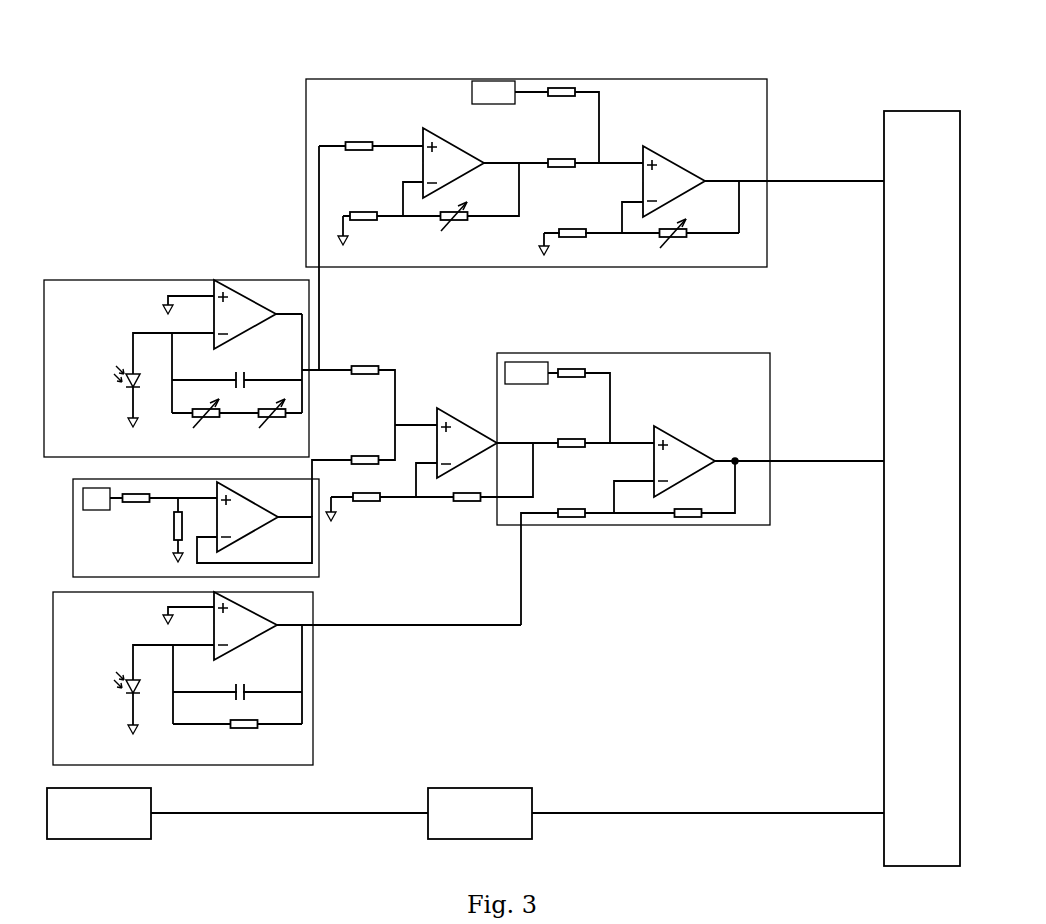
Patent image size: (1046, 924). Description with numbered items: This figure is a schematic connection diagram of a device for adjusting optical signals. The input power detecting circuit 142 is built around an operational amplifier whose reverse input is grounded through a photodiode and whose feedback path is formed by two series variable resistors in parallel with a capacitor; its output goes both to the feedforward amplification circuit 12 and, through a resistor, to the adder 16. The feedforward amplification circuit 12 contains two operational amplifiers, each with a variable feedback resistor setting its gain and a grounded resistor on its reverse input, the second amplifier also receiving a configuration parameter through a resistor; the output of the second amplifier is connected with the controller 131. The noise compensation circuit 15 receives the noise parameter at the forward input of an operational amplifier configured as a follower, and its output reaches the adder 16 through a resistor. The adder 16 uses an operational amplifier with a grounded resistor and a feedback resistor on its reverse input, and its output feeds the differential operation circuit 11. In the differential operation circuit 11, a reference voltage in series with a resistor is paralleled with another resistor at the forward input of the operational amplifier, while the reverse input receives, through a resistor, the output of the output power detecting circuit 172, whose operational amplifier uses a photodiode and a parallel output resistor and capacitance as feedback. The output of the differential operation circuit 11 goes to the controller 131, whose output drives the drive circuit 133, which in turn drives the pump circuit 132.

The differential operation circuit 11 is at (690, 489).
The feedforward amplification circuit 12 is at (595, 224).
The noise compensation circuit 15 is at (196, 528).
The adder 16 is at (483, 453).
The controller 131 is at (922, 488).
The pump circuit 132 is at (99, 813).
The drive circuit 133 is at (480, 813).
The input power detecting circuit 142 is at (198, 368).
The output power detecting circuit 172 is at (287, 678).